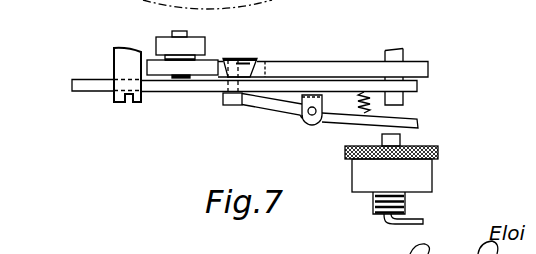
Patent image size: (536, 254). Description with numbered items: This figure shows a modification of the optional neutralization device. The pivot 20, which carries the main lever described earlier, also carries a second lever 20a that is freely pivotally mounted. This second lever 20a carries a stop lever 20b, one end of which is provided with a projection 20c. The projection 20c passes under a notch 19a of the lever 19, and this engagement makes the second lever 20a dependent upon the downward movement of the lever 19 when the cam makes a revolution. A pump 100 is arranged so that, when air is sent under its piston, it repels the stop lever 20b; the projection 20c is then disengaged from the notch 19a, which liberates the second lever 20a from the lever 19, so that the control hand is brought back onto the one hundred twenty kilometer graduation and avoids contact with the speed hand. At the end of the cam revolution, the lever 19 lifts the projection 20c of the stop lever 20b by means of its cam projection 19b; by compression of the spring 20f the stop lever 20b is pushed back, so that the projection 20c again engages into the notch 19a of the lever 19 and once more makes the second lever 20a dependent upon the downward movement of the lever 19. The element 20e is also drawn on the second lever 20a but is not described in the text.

The guide block 20e is at (120, 68).
The second lever 20a is at (162, 86).
The lever 19 is at (313, 67).
The notch 19a is at (265, 67).
The cam projection 19b is at (247, 58).
The projection 20c is at (235, 106).
The stop lever 20b is at (419, 122).
The spring 20f is at (359, 94).
The pivot 20 is at (391, 56).
The pump 100 is at (391, 179).